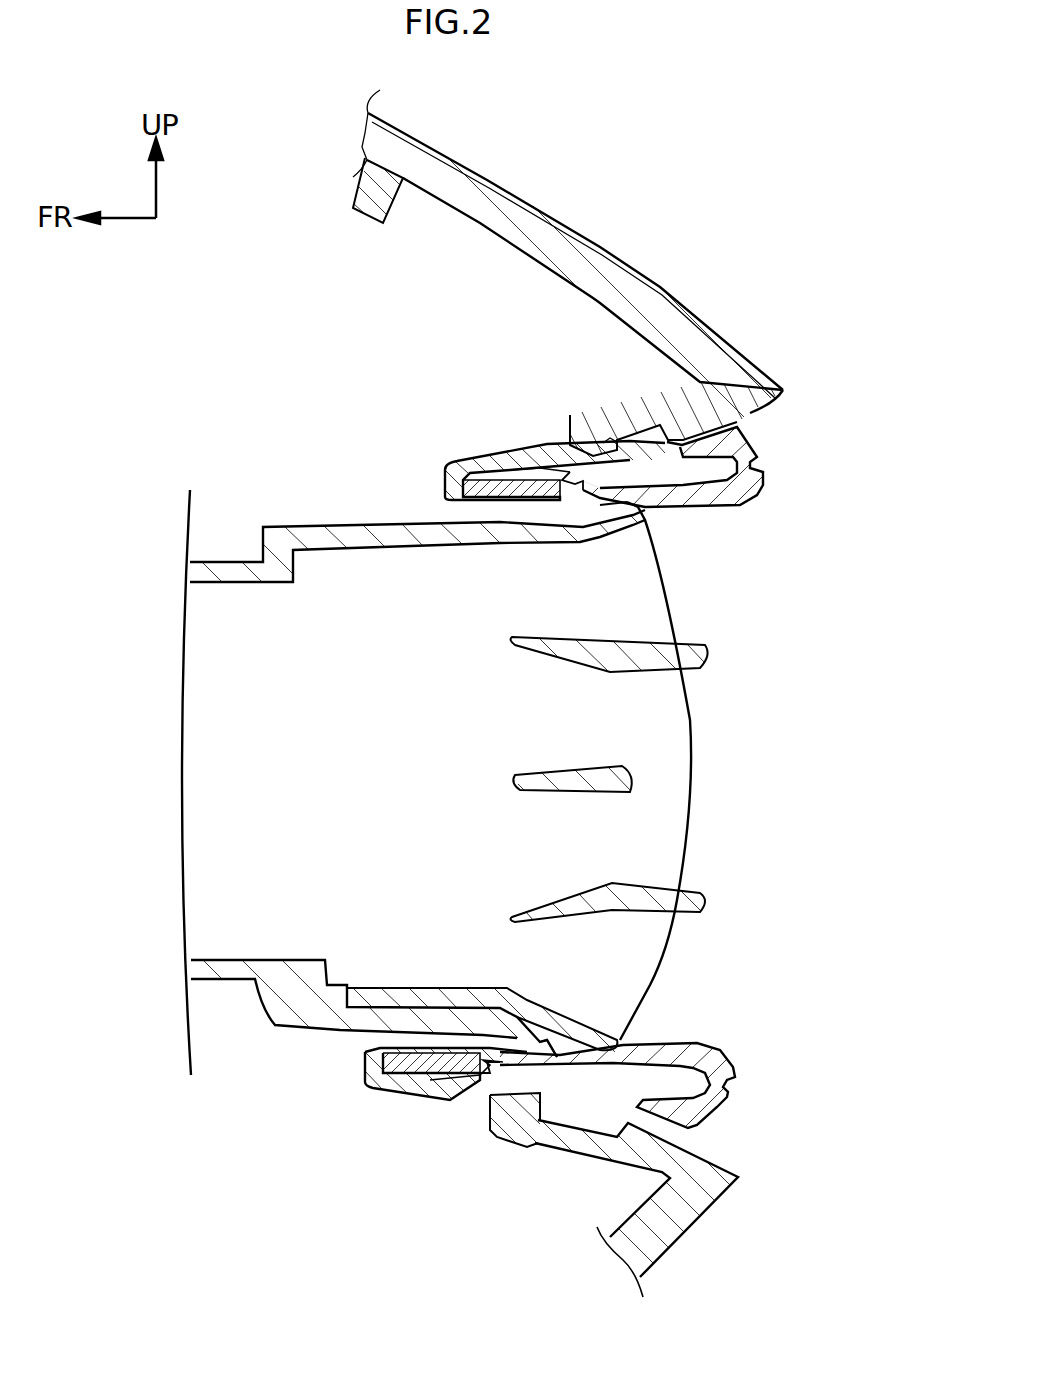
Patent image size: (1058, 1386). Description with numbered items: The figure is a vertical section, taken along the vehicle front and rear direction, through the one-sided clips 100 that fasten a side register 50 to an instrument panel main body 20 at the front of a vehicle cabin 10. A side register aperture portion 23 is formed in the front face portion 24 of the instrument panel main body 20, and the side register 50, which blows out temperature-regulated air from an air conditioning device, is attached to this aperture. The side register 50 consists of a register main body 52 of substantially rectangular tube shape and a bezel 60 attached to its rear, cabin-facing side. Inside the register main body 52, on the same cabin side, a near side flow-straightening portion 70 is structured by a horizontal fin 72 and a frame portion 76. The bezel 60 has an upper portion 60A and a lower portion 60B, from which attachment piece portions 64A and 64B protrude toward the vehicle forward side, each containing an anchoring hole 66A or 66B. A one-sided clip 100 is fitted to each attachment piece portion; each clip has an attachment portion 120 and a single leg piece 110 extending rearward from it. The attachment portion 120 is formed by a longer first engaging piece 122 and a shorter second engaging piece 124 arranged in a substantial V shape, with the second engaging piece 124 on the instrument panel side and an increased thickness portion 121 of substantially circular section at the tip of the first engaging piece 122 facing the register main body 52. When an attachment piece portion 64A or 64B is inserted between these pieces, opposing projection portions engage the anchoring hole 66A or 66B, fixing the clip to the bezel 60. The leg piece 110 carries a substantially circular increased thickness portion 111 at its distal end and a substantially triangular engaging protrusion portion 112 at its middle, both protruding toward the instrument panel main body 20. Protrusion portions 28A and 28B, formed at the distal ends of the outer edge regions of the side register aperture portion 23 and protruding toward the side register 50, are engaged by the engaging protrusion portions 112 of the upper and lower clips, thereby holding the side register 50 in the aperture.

The vehicle cabin 10 is at (846, 314).
The instrument panel main body 20 is at (610, 693).
The side register aperture portion 23 is at (770, 394).
The front face portion 24 is at (660, 288).
The protrusion portion 28A is at (583, 414).
The protrusion portion 28B is at (505, 1100).
The side register 50 is at (546, 759).
The register main body 52 is at (393, 523).
The bezel 60 is at (690, 777).
The upper portion 60A is at (728, 472).
The lower portion 60B is at (671, 1085).
The attachment piece portion 64A is at (495, 495).
The attachment piece portion 64B is at (427, 1047).
The anchoring hole 66A is at (575, 458).
The anchoring hole 66B is at (500, 1062).
The near side flow-straightening portion 70 is at (653, 750).
The horizontal fin 72 is at (628, 777).
The frame portion 76 is at (707, 652).
The one-sided clip 100 is at (458, 775).
The leg piece 110 is at (500, 455).
The increased thickness portion 111 is at (643, 438).
The engaging protrusion portion 112 is at (553, 463).
The attachment portion 120 is at (458, 775).
The increased thickness portion 121 is at (640, 510).
The first engaging piece 122 is at (560, 488).
The second engaging piece 124 is at (540, 466).